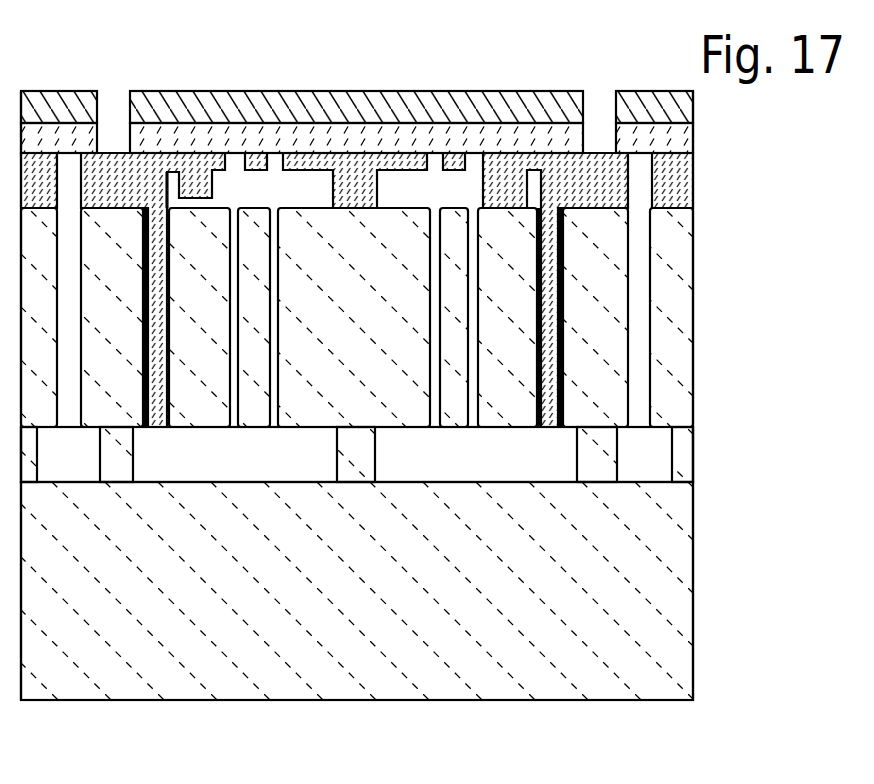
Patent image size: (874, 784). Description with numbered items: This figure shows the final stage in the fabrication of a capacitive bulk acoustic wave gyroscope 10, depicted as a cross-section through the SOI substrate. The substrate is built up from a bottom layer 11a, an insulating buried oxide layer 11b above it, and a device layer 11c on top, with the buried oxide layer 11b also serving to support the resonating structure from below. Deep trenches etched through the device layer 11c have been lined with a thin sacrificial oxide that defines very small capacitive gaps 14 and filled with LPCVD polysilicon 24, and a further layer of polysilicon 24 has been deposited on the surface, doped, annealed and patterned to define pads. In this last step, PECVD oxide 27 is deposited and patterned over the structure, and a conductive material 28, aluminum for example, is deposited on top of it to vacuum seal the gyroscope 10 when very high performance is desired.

The bulk acoustic wave gyroscope 10 is at (773, 122).
The bottom layer 11a is at (692, 578).
The insulating (buried oxide) layer 11b is at (692, 453).
The device layer 11c is at (692, 292).
The capacitive gaps 14 is at (210, 209).
The LPCVD polysilicon 24 is at (695, 185).
The PECVD oxide 27 is at (695, 140).
The conductive material 28 is at (695, 108).